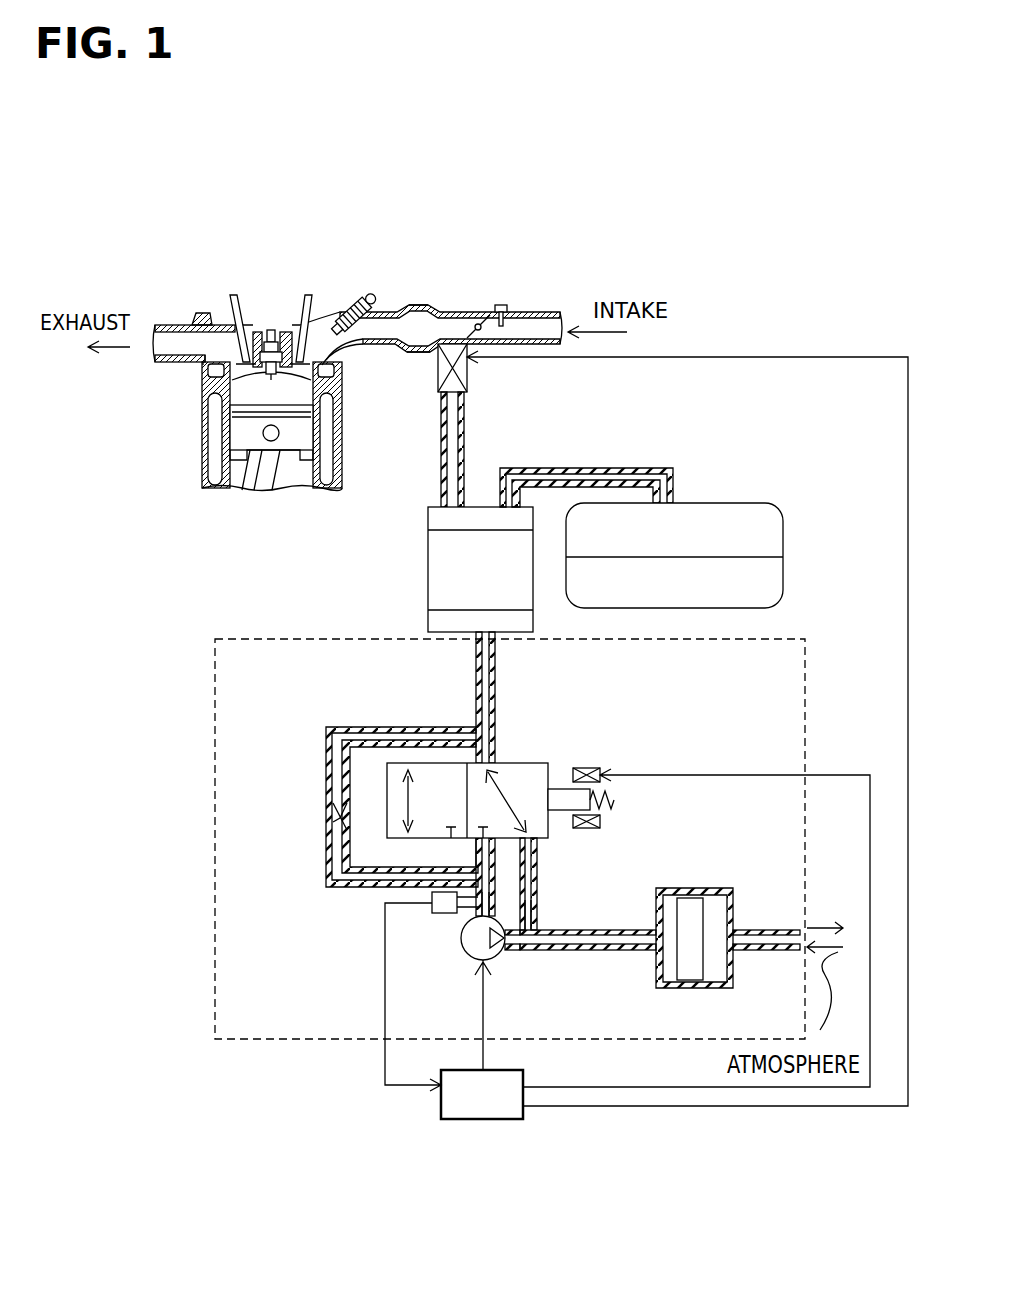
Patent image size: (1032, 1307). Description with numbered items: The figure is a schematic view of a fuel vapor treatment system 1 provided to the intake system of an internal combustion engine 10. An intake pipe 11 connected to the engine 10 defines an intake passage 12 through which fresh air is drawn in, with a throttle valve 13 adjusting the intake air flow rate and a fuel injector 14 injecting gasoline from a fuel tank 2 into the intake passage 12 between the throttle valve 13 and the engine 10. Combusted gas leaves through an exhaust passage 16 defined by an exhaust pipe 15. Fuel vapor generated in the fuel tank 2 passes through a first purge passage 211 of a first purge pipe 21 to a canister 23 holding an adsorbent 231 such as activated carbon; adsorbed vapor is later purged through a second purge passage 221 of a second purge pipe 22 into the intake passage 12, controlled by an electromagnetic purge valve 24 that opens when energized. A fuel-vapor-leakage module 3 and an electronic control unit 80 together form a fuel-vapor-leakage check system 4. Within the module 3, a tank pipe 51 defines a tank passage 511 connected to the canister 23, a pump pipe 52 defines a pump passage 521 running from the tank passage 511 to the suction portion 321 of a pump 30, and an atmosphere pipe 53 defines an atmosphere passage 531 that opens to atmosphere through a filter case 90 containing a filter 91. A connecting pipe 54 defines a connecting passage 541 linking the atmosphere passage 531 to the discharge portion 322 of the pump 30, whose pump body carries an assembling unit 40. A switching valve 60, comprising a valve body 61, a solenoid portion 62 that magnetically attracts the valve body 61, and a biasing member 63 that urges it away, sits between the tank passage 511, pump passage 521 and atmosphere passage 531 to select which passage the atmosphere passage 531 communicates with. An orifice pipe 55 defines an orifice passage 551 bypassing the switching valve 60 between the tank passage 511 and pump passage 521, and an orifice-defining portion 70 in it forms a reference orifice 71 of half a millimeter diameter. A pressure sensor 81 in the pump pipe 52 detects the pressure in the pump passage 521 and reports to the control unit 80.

The fuel vapor treatment system 1 is at (716, 210).
The fuel tank 2 is at (722, 503).
The fuel-vapor-leakage module 3 is at (215, 685).
The fuel-vapor-leakage check system 4 is at (398, 1186).
The internal combustion engine 10 is at (202, 472).
The intake pipe 11 is at (455, 312).
The intake passage 12 is at (413, 328).
The throttle valve 13 is at (490, 316).
The fuel injector 14 is at (368, 296).
The exhaust pipe 15 is at (175, 325).
The exhaust passage 16 is at (205, 313).
The first purge pipe 21 is at (592, 468).
The first purge passage 211 is at (632, 480).
The second purge pipe 22 is at (452, 463).
The second purge passage 221 is at (458, 436).
The canister 23 is at (428, 532).
The adsorbent 231 is at (445, 590).
The purge valve 24 is at (467, 387).
The pump 30 is at (470, 948).
The assembling unit 40 is at (466, 918).
The tank pipe 51 is at (477, 684).
The tank passage 511 is at (480, 651).
The pump pipe 52 is at (530, 862).
The pump passage 521 is at (472, 849).
The atmosphere pipe 53 is at (612, 930).
The atmosphere passage 531 is at (623, 950).
The connecting pipe 54 is at (514, 950).
The connecting passage 541 is at (497, 952).
The orifice pipe 55 is at (326, 745).
The orifice passage 551 is at (338, 776).
The switching valve 60 is at (566, 728).
The valve body 61 is at (512, 763).
The solenoid portion 62 is at (600, 822).
The biasing member 63 is at (614, 800).
The orifice-defining portion 70 is at (330, 812).
The reference orifice 71 is at (333, 827).
The electronic control unit 80 is at (485, 1120).
The pressure sensor 81 is at (432, 901).
The filter case 90 is at (672, 889).
The filter 91 is at (690, 903).
The suction portion 321 is at (497, 905).
The discharge portion 322 is at (516, 925).